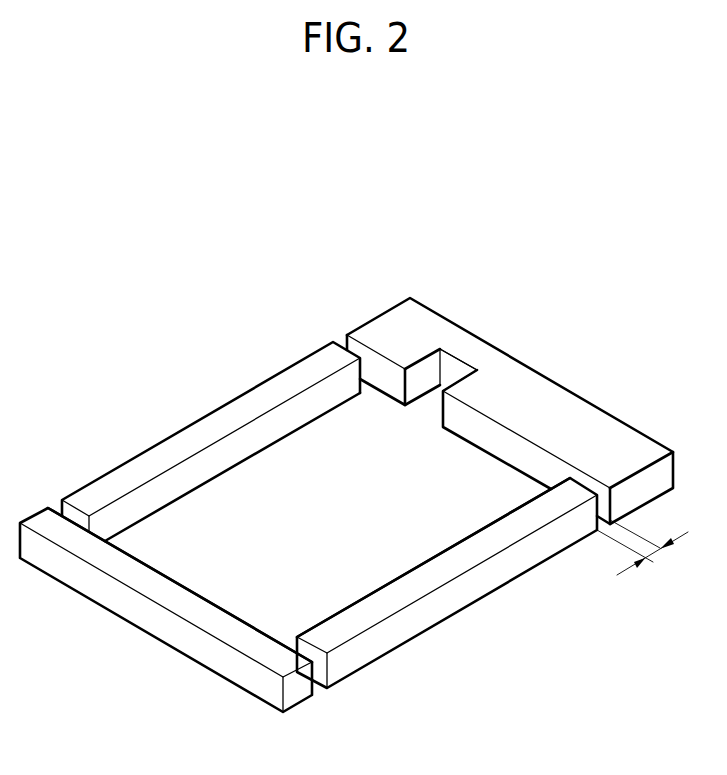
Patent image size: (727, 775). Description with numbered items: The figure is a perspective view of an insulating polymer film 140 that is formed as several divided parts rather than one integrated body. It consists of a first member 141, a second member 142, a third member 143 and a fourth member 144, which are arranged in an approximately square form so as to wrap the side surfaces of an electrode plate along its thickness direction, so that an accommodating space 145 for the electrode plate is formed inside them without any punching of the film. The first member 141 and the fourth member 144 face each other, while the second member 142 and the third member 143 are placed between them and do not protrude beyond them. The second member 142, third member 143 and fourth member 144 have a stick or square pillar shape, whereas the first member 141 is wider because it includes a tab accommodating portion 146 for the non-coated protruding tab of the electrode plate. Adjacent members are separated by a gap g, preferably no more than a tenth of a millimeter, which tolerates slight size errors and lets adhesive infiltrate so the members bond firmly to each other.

The insulating polymer film 140 is at (282, 291).
The first member 141 is at (542, 405).
The second member 142 is at (230, 408).
The third member 143 is at (453, 568).
The fourth member 144 is at (158, 590).
The accommodating space 145 is at (237, 489).
The tab accommodating portion 146 is at (438, 372).
The gap g is at (642, 549).